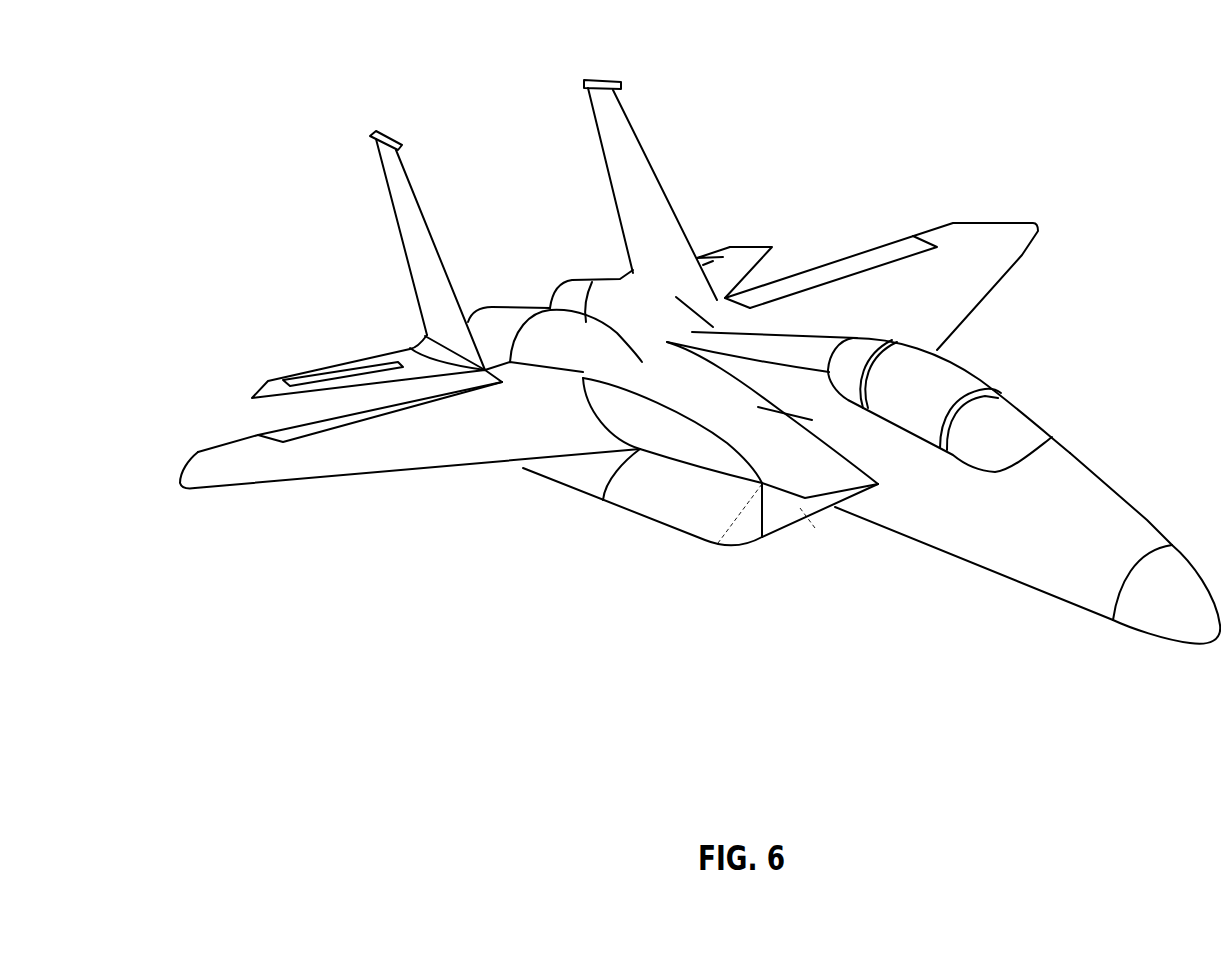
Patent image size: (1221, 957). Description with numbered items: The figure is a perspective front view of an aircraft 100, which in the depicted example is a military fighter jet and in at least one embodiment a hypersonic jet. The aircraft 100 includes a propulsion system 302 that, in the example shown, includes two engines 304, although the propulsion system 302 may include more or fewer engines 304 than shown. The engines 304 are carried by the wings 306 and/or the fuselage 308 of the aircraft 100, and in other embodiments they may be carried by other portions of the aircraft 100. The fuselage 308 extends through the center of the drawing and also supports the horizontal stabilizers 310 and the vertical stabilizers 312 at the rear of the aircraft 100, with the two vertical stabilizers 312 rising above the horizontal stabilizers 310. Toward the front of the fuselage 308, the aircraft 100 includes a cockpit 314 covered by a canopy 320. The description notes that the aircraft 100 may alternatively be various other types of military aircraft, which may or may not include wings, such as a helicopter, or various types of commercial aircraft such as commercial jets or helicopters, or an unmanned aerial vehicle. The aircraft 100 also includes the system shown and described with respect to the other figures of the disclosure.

The aircraft 100 is at (318, 93).
The propulsion system 302 is at (745, 645).
The engines 304 is at (1053, 434).
The wings 306 is at (417, 468).
The fuselage 308 is at (792, 418).
The horizontal stabilizers 310 is at (362, 358).
The vertical stabilizers 312 is at (420, 208).
The cockpit 314 is at (947, 388).
The canopy 320 is at (935, 410).